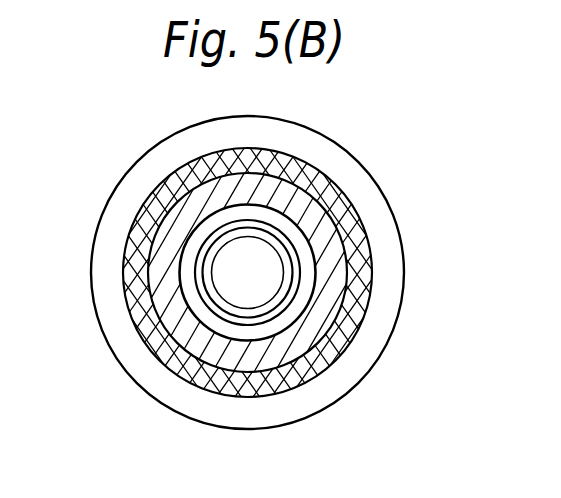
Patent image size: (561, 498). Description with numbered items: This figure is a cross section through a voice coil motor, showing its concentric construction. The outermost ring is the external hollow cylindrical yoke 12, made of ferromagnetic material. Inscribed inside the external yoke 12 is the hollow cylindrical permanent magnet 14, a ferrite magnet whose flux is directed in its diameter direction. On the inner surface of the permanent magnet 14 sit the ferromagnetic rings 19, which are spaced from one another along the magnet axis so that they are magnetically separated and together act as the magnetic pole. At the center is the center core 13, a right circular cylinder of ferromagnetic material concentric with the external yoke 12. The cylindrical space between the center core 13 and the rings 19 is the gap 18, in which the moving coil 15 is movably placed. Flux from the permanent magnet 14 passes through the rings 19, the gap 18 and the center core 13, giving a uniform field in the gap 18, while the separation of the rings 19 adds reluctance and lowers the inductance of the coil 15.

The external hollow cylindrical yoke 12 is at (243, 132).
The center core 13 is at (265, 293).
The hollow cylindrical permanent magnet 14 is at (299, 153).
The moving coil 15 is at (297, 283).
The gap 18 is at (282, 255).
The ferromagnetic rings 19 is at (308, 207).